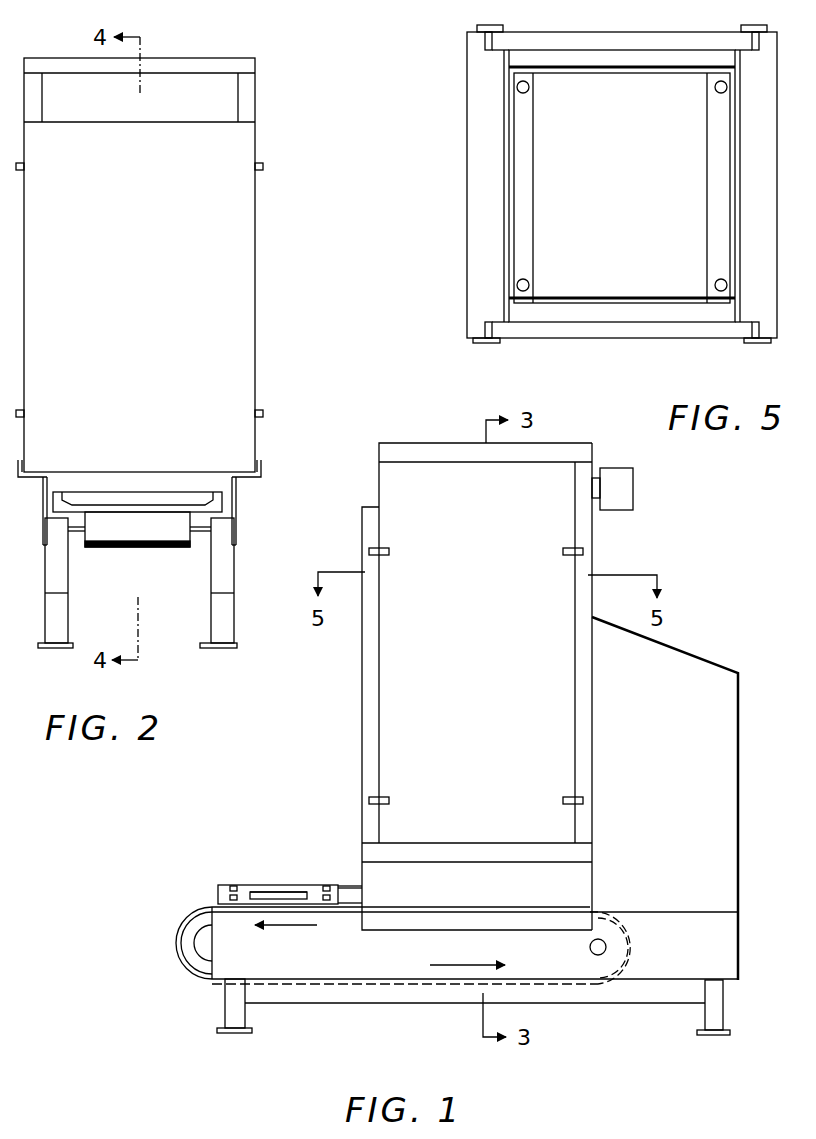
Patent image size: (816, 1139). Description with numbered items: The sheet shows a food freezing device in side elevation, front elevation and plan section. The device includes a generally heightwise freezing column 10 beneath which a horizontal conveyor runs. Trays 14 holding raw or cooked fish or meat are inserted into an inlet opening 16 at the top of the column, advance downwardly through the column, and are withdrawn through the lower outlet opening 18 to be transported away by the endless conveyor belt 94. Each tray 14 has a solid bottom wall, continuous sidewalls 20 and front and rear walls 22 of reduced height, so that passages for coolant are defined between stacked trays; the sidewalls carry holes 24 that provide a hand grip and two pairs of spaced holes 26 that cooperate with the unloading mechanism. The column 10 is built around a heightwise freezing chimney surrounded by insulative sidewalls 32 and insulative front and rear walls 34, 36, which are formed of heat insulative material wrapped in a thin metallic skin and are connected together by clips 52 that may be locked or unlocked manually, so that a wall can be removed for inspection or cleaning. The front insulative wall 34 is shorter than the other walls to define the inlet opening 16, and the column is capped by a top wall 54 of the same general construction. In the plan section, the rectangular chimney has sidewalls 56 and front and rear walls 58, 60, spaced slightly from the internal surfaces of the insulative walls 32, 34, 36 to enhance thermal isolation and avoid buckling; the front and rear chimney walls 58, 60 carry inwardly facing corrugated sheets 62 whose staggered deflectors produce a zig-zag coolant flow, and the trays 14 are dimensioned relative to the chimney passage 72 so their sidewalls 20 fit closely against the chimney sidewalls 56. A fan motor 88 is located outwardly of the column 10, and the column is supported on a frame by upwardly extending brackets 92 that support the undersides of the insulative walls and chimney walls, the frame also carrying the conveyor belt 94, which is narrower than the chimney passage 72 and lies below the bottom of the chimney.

In FIG. 2, the freezing column 10 is at (266, 303).
In FIG. 1, the freezing column 10 is at (354, 707).
In FIG. 1, the trays 14 is at (209, 866).
In FIG. 2, the inlet opening 16 is at (168, 98).
In FIG. 1, the inlet opening 16 is at (366, 487).
In FIG. 2, the outlet opening 18 is at (155, 484).
In FIG. 1, the outlet opening 18 is at (357, 879).
In FIG. 1, the sidewalls 20 is at (266, 890).
In FIG. 2, the front and rear walls 22 is at (211, 499).
In FIG. 1, the front and rear walls 22 is at (217, 888).
In FIG. 1, the holes 24 is at (283, 893).
In FIG. 1, the spaced holes 26 is at (233, 885).
In FIG. 2, the insulative sidewalls 32 is at (35, 95).
In FIG. 5, the insulative sidewalls 32 is at (597, 50).
In FIG. 1, the insulative sidewalls 32 is at (555, 522).
In FIG. 2, the insulative front wall 34 is at (222, 220).
In FIG. 5, the insulative front wall 34 is at (485, 126).
In FIG. 1, the insulative front wall 34 is at (372, 660).
In FIG. 5, the insulative rear wall 36 is at (752, 245).
In FIG. 1, the insulative rear wall 36 is at (583, 592).
In FIG. 2, the clips 52 is at (265, 166).
In FIG. 5, the clips 52 is at (762, 26).
In FIG. 1, the clips 52 is at (390, 551).
In FIG. 2, the top wall 54 is at (215, 68).
In FIG. 1, the top wall 54 is at (415, 450).
In FIG. 5, the chimney sidewalls 56 is at (618, 73).
In FIG. 5, the chimney front wall 58 is at (514, 215).
In FIG. 5, the chimney rear wall 60 is at (730, 135).
In FIG. 5, the corrugated sheets 62 is at (523, 179).
In FIG. 5, the chimney passage 72 is at (605, 195).
In FIG. 1, the motor 88 is at (615, 488).
In FIG. 2, the brackets 92 is at (262, 472).
In FIG. 1, the brackets 92 is at (578, 862).
In FIG. 2, the endless conveyor belt 94 is at (140, 530).
In FIG. 1, the endless conveyor belt 94 is at (173, 945).